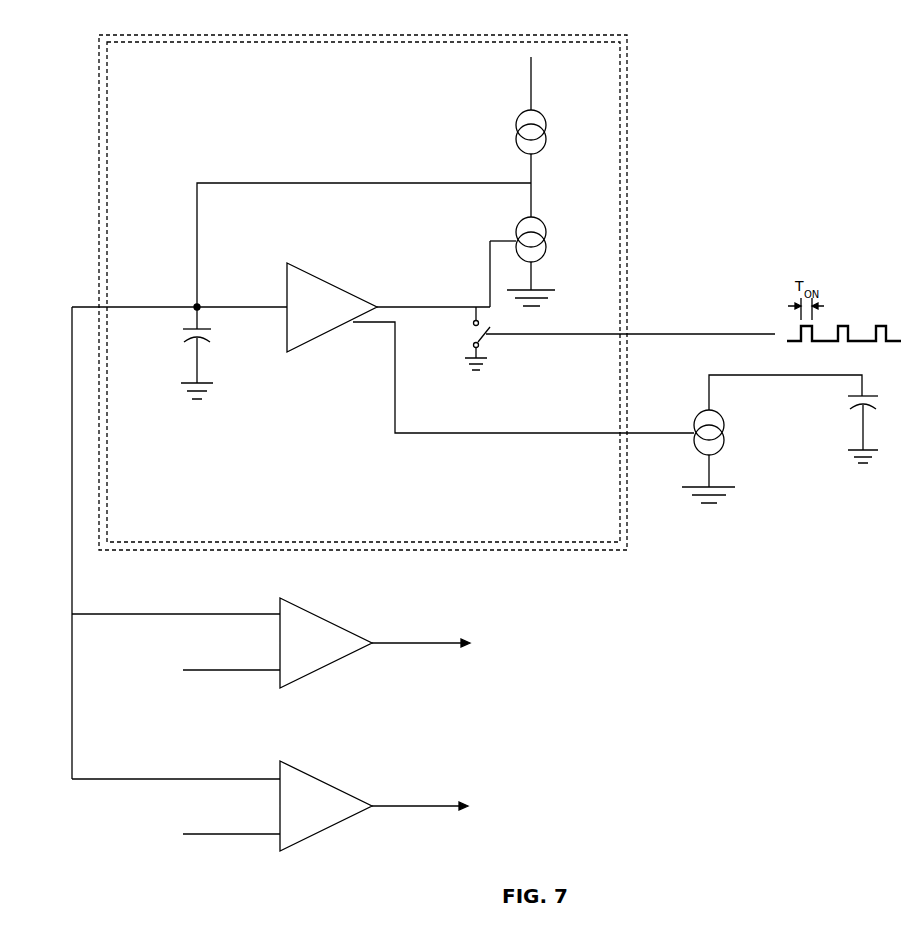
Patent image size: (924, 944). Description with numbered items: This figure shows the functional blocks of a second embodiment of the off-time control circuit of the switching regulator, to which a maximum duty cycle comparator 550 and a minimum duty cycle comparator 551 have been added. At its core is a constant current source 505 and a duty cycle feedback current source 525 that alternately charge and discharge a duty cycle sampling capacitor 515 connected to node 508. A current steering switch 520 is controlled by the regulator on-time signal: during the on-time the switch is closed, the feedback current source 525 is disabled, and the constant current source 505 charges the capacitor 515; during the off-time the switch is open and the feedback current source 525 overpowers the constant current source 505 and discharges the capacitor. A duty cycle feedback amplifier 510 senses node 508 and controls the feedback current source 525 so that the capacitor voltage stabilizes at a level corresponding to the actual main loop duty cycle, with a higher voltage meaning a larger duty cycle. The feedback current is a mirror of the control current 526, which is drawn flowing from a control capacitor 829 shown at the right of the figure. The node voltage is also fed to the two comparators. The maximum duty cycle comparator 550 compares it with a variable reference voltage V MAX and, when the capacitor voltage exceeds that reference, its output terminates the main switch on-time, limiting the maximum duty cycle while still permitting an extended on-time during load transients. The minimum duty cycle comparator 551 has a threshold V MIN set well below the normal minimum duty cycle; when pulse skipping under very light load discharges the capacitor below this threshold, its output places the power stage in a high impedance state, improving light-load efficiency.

The constant current source 505 is at (536, 108).
The duty cycle feedback current source 525 is at (536, 218).
The node 508 is at (200, 304).
The duty cycle sampling capacitor 515 is at (186, 346).
The duty cycle feedback amplifier 510 is at (310, 274).
The current steering switch 520 is at (472, 338).
The control current 526 is at (716, 412).
The control capacitor Ccon 829 is at (866, 412).
The maximum duty cycle comparator 550 is at (330, 622).
The minimum duty cycle comparator 551 is at (322, 782).